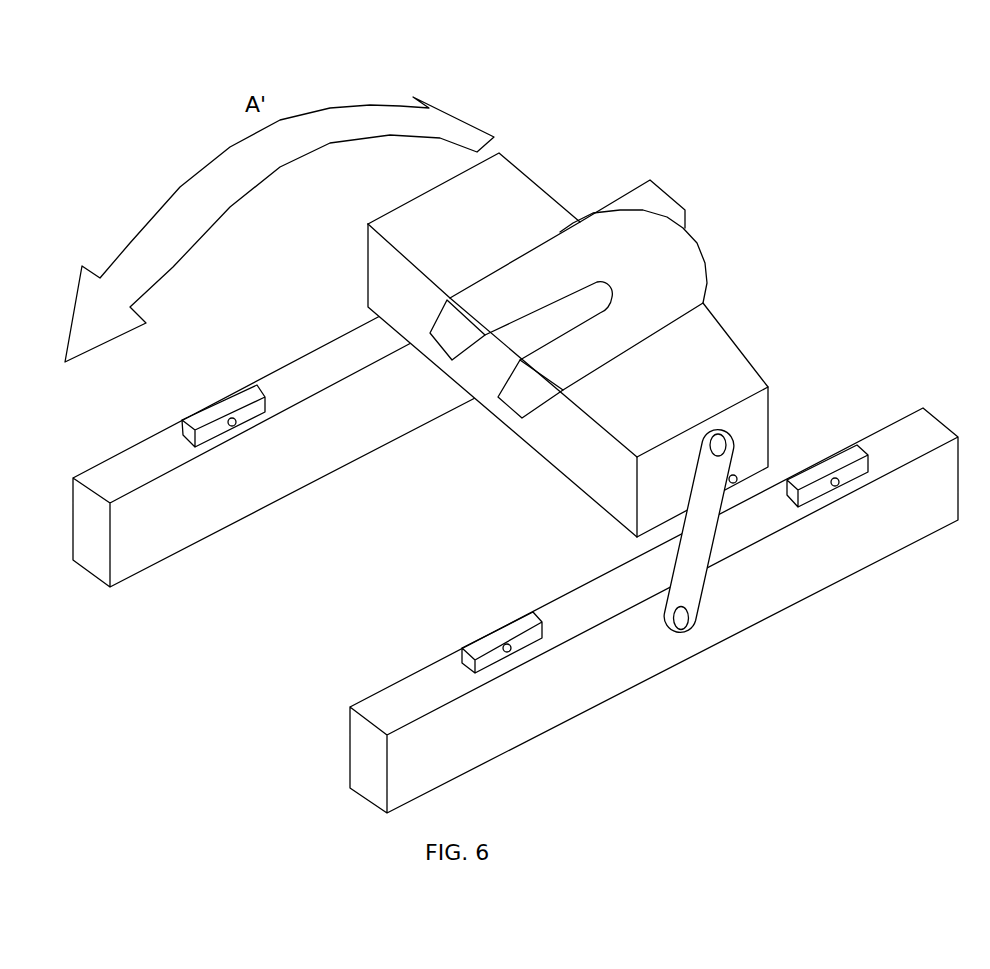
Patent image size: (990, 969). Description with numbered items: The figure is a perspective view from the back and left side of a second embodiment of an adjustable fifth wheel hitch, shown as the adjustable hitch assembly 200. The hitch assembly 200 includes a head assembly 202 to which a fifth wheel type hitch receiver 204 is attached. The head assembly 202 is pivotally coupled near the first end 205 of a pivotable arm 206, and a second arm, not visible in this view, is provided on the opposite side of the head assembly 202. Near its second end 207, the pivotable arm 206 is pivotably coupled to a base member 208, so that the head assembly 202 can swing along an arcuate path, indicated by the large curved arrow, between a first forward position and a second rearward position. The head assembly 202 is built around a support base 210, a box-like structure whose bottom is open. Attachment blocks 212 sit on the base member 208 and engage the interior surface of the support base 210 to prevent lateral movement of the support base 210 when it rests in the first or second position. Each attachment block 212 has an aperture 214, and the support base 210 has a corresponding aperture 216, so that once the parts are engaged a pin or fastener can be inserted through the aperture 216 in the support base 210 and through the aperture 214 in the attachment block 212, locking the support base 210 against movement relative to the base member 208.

The adjustable hitch assembly 200 is at (702, 173).
The head assembly 202 is at (722, 353).
The fifth wheel type hitch receiver 204 is at (630, 330).
The first end 205 is at (735, 435).
The pivotable arm 206 is at (765, 545).
The second end 207 is at (693, 618).
The base member 208 is at (547, 717).
The support base 210 is at (583, 465).
The attachment blocks 212 is at (203, 418).
The apertures 214 is at (232, 427).
The aperture 216 is at (737, 477).